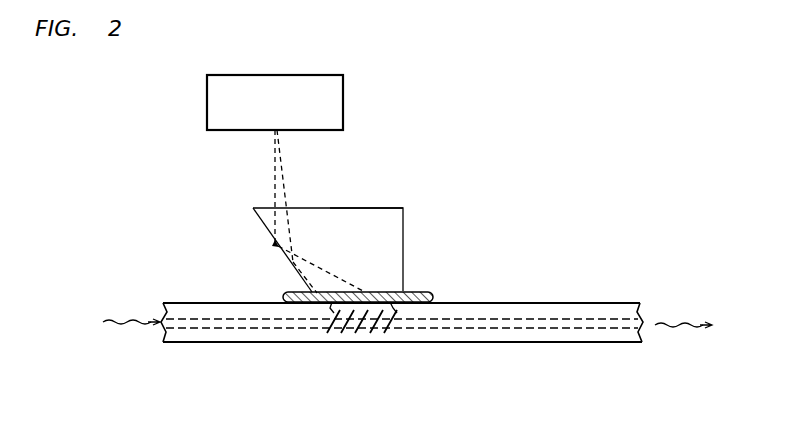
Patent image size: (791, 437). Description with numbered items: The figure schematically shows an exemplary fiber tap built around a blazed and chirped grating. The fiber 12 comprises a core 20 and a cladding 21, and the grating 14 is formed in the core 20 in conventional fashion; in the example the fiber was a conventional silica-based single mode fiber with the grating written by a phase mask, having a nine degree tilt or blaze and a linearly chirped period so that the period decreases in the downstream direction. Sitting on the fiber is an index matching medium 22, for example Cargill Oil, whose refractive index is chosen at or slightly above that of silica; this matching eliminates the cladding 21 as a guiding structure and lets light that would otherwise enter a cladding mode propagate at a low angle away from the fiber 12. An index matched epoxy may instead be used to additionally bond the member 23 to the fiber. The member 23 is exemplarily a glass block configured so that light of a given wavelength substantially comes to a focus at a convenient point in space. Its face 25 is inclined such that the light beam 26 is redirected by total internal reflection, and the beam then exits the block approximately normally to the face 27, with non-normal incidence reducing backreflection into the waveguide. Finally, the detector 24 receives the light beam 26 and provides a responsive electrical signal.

The fiber 12 is at (285, 342).
The grating 14 is at (385, 357).
The core 20 is at (202, 315).
The cladding 21 is at (165, 337).
The index matching medium 22 is at (437, 293).
The member 23 is at (405, 245).
The detector 24 is at (344, 88).
The face 25 is at (272, 232).
The light beam 26 is at (283, 181).
The face 27 is at (370, 208).